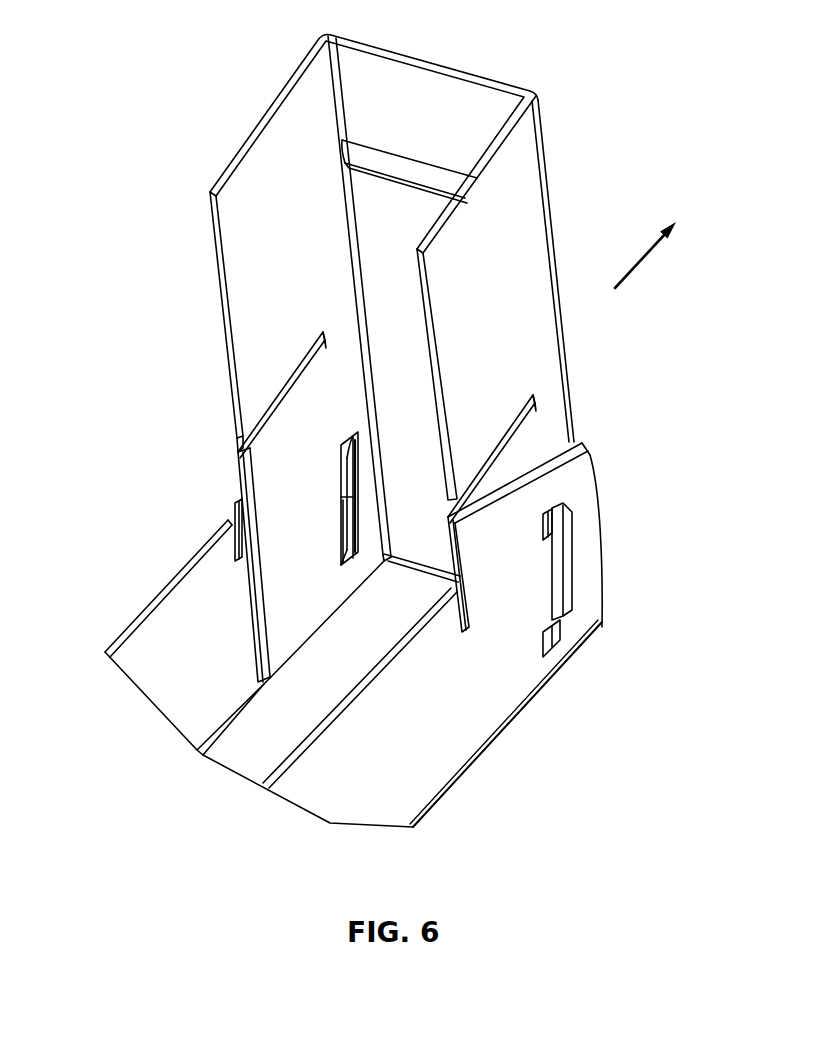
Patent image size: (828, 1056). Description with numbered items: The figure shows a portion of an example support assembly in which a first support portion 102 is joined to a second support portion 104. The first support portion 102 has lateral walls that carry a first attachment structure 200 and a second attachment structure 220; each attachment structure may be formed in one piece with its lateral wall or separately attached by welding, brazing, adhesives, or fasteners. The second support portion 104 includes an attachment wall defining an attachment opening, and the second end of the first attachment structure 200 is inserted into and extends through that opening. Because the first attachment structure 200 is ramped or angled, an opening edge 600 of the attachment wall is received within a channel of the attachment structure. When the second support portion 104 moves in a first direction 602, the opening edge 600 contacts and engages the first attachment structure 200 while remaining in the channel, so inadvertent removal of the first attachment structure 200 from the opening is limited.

The first support portion 102 is at (129, 610).
The second support portion 104 is at (206, 297).
The first attachment structure 200 is at (340, 488).
The opening edge 600 is at (338, 537).
The second attachment structure 220 is at (558, 573).
The first direction 602 is at (633, 272).